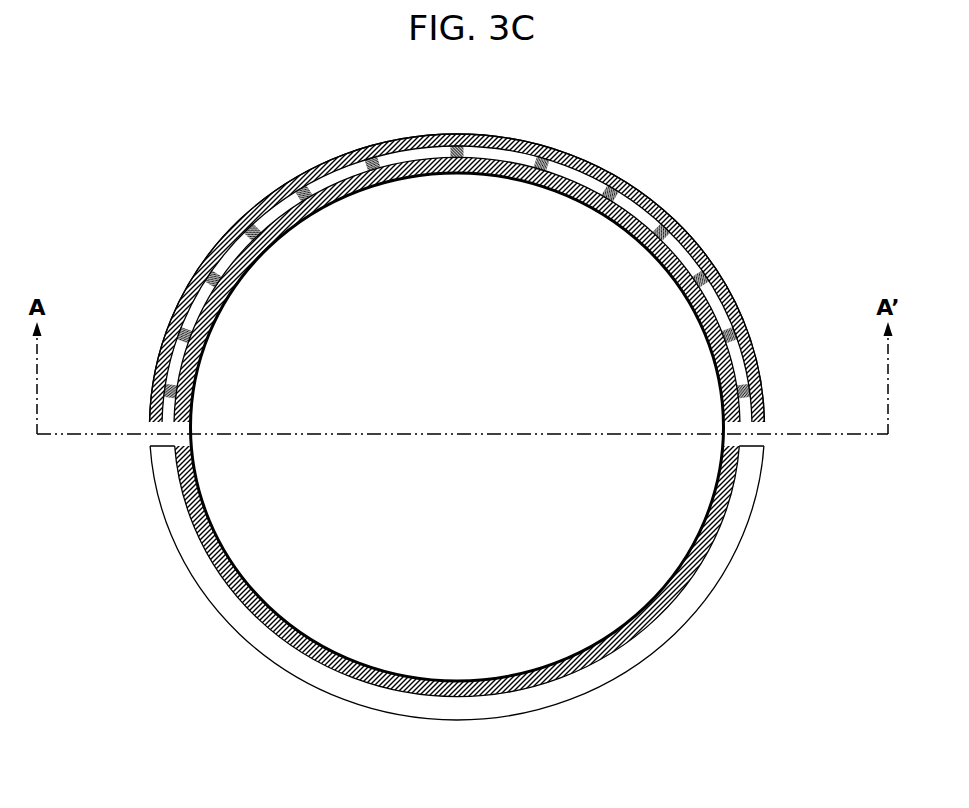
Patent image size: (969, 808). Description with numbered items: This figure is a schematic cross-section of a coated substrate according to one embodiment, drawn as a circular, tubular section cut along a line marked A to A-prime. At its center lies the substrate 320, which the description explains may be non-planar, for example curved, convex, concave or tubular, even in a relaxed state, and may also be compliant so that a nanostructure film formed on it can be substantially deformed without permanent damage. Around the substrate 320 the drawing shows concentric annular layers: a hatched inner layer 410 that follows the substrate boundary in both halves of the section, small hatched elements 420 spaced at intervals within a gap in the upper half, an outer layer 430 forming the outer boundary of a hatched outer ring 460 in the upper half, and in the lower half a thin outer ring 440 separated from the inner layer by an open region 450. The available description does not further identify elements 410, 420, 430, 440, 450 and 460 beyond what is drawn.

The substrate 320 is at (457, 427).
The inner cladding layer 410 is at (712, 465).
The spacer elements 420 is at (704, 270).
The outer layer 430 is at (651, 187).
The outer ring bottom half 440 is at (713, 594).
The gap region 450 is at (216, 668).
The outer hatched ring 460 is at (215, 200).